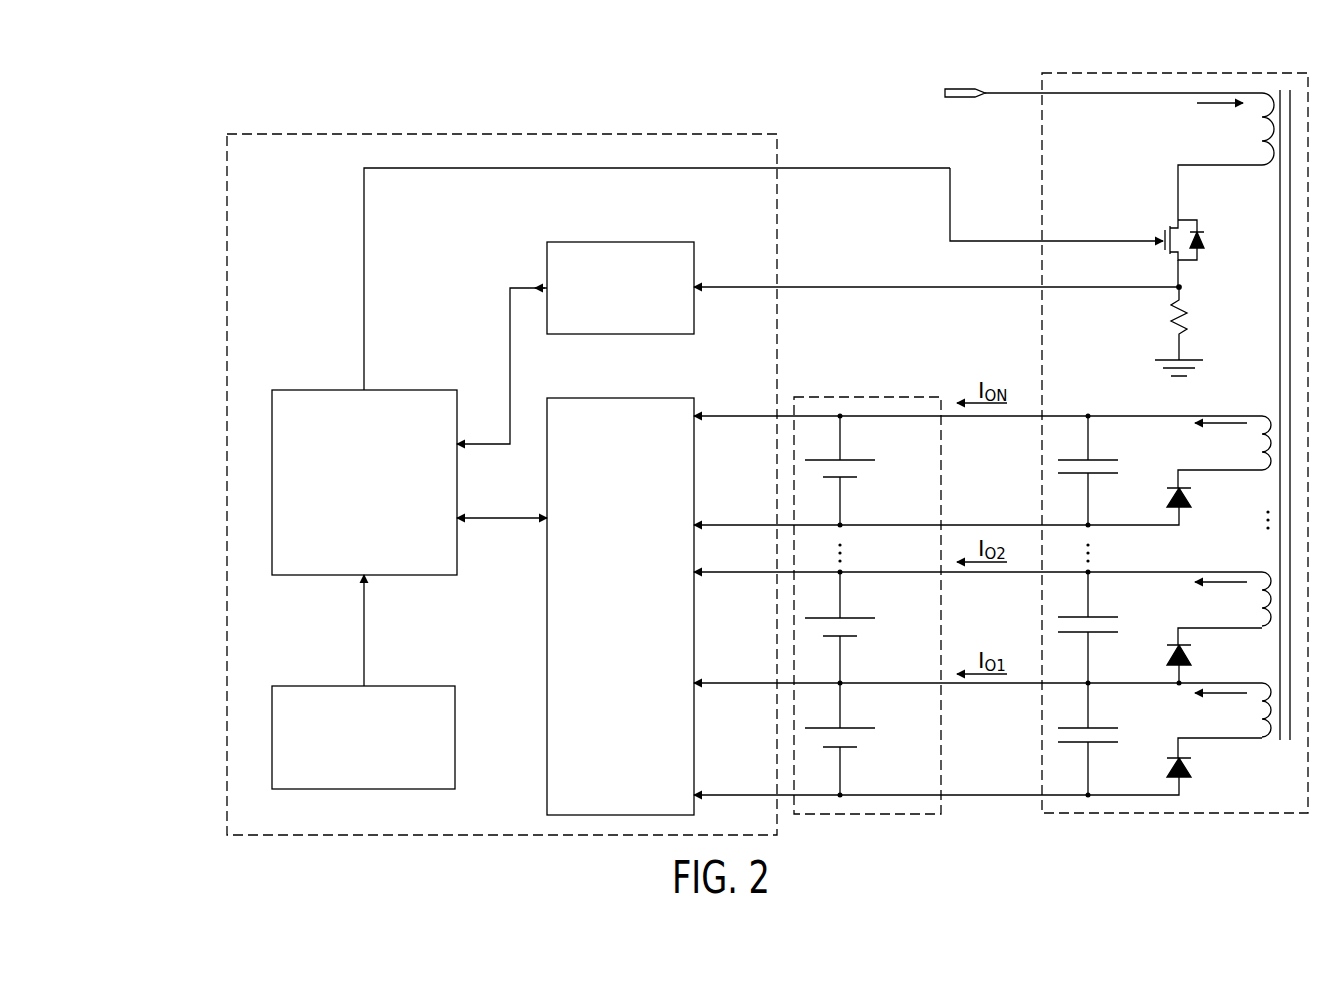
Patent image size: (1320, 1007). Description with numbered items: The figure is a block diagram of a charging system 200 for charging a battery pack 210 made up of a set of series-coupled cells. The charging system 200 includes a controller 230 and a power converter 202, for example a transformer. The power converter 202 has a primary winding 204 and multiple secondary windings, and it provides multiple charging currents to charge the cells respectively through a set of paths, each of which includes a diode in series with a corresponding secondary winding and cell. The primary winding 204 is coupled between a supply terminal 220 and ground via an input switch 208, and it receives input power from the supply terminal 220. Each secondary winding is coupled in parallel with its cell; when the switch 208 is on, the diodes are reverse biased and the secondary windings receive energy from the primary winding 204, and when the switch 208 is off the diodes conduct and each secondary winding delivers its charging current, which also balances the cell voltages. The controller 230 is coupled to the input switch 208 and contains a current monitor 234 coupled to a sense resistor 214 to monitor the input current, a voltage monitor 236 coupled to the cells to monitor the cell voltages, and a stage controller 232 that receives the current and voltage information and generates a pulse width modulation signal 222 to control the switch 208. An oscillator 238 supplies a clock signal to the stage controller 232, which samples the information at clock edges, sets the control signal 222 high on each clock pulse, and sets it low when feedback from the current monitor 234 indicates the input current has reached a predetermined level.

The charging system 200 is at (190, 95).
The power converter 202 is at (1248, 73).
The primary winding 204 is at (1270, 168).
The input switch 208 is at (1163, 229).
The battery pack 210 is at (850, 397).
The sense resistor 214 is at (1174, 314).
The supply terminal 220 is at (965, 90).
The pulse width modulation signal 222 is at (948, 225).
The controller 230 is at (700, 134).
The stage controller 232 is at (437, 391).
The current monitor 234 is at (680, 243).
The voltage monitor 236 is at (680, 398).
The oscillator 238 is at (410, 687).